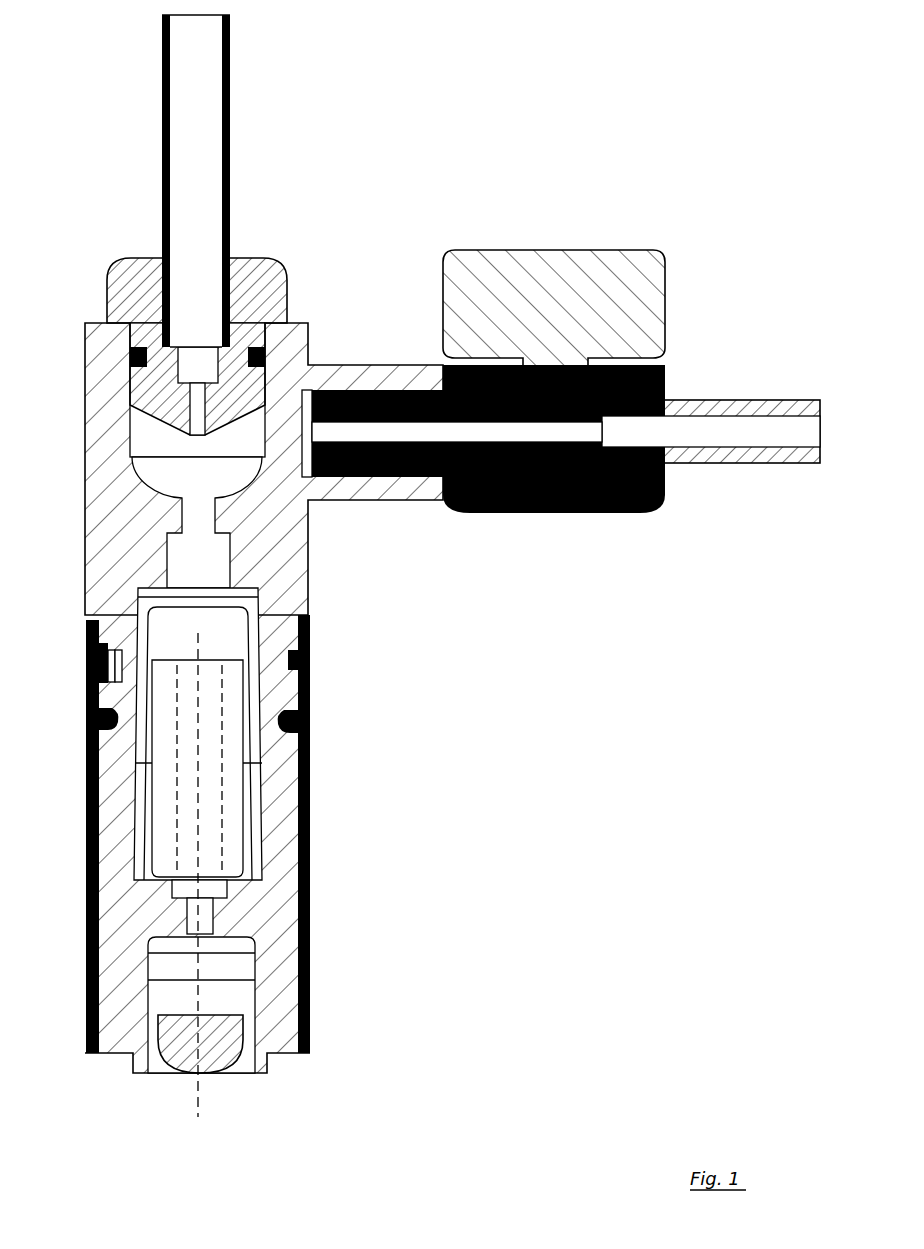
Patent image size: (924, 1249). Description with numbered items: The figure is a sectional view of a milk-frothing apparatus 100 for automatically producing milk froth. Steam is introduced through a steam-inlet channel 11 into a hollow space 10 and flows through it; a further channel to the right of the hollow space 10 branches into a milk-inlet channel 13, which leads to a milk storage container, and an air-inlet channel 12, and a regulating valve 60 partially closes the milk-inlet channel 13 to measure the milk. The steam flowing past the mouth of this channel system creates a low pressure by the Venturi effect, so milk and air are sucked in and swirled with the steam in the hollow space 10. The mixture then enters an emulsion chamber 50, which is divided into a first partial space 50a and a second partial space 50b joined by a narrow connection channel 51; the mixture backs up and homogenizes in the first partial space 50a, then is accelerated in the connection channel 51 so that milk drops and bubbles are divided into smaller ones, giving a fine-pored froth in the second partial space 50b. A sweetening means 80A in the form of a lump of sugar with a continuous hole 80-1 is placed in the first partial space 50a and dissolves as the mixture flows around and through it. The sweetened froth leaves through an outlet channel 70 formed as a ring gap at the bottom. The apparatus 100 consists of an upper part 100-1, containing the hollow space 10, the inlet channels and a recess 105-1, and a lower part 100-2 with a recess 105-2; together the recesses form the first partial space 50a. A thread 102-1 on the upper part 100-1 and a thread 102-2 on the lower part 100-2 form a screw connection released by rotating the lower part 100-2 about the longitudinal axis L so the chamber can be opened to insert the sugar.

The milk-frothing apparatus 100 is at (416, 604).
The upper part 100-1 is at (86, 497).
The lower part 100-2 is at (88, 762).
The thread 102-1 is at (110, 645).
The thread 102-2 is at (122, 645).
The hollow space 10 is at (232, 445).
The steam-inlet channel 11 is at (205, 358).
The air-inlet channel 12 is at (340, 375).
The milk-inlet channel 13 is at (370, 435).
The regulating valve 60 is at (605, 315).
The emulsion chamber 50 is at (280, 877).
The first partial space 50a is at (253, 720).
The second partial space 50b is at (245, 998).
The connection channel 51 is at (207, 920).
The outlet channel 70 is at (233, 1063).
The continuous hole 80-1 is at (255, 788).
The sweetening means 80A is at (242, 857).
The recess 105-1 is at (250, 652).
The recess 105-2 is at (213, 807).
The longitudinal axis L is at (200, 1128).